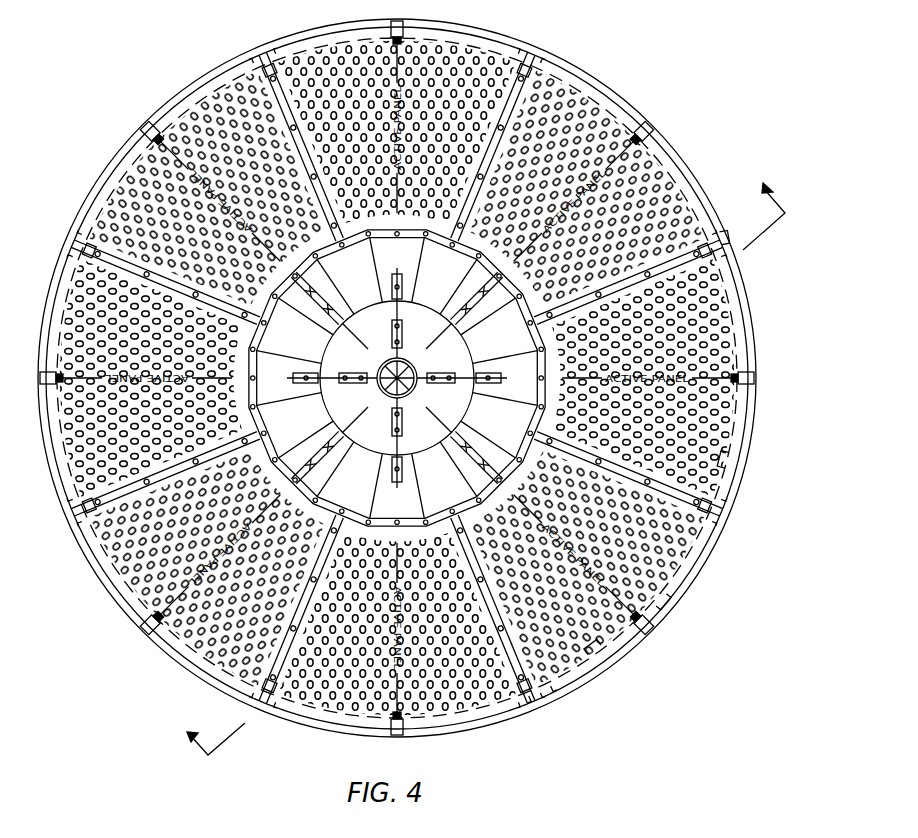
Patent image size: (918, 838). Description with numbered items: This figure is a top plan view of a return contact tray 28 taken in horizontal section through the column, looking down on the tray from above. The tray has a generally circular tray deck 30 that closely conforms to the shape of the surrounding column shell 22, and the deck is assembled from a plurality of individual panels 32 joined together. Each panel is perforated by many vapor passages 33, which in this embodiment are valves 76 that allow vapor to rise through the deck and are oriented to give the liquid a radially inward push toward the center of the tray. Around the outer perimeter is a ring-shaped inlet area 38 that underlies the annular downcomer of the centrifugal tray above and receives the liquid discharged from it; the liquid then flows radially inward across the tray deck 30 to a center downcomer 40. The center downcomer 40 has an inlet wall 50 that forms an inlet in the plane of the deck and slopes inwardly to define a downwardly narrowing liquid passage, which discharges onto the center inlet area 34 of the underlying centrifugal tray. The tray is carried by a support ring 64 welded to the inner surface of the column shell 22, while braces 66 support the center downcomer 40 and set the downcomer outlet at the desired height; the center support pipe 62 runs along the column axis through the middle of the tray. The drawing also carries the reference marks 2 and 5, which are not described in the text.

The screen assembly 2 is at (629, 93).
The section line 5- 5 is at (493, 493).
The column shell 22 is at (752, 343).
The return contact tray 28 is at (748, 312).
The tray deck 30 is at (726, 468).
The panels 32 is at (695, 530).
The vapor passages 33 is at (535, 678).
The center inlet area 34 is at (450, 412).
The ring-shaped inlet area 38 is at (732, 428).
The center downcomer 40 is at (370, 276).
The inlet wall 50 is at (490, 342).
The center support pipe 62 is at (403, 348).
The support ring 64 is at (672, 591).
The braces 66 is at (352, 384).
The valves 76 is at (592, 648).